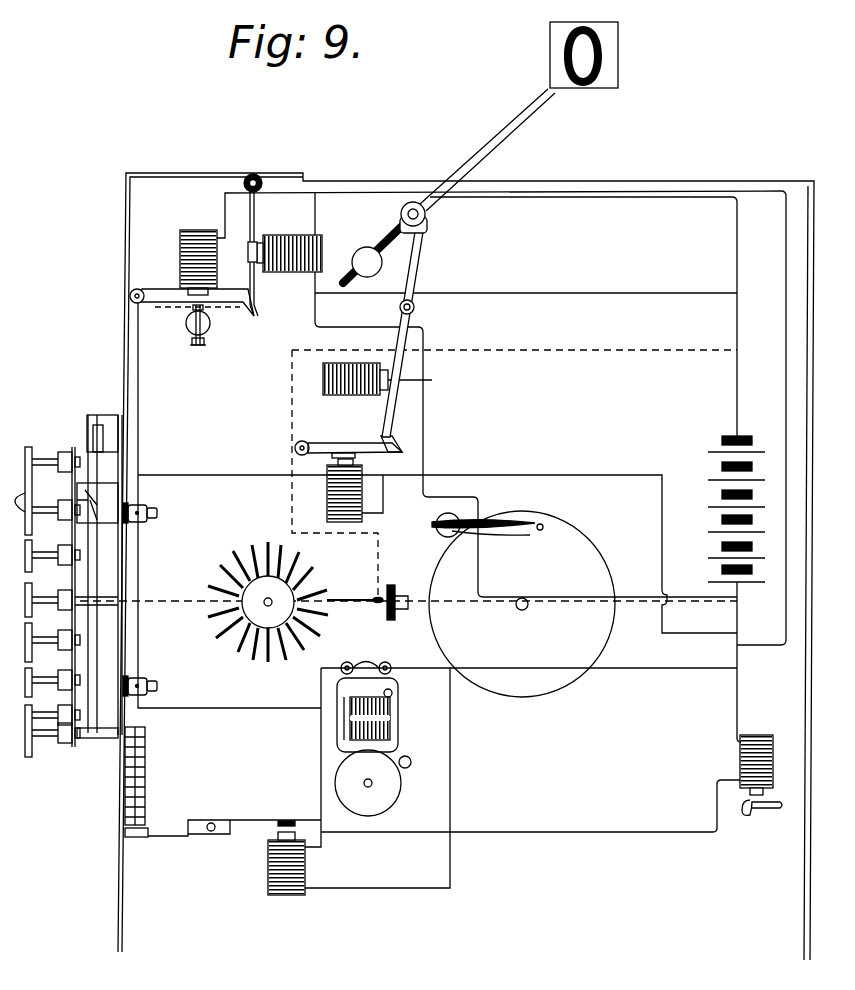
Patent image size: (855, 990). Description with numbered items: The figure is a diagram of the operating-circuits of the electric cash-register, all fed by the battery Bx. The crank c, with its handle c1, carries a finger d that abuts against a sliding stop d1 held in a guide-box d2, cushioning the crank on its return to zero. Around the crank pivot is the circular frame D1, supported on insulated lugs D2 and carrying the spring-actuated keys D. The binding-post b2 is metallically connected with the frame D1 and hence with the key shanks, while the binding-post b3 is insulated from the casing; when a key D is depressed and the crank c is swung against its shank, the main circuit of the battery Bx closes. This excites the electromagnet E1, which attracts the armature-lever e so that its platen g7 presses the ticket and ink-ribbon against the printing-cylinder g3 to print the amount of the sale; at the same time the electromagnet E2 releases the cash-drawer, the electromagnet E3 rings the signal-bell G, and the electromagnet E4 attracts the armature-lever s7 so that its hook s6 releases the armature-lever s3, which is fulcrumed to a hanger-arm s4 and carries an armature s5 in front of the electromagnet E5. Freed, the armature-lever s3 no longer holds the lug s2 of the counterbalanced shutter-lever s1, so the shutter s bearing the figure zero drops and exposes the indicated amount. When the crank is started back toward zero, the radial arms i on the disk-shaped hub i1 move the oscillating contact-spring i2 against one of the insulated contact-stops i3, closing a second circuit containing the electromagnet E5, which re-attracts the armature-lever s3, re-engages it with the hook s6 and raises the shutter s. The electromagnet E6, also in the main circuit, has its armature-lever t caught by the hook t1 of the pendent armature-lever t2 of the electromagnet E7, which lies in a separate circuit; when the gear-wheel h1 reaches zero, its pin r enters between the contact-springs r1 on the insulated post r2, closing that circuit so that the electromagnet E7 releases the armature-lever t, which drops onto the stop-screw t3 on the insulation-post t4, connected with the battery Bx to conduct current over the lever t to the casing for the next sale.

The shutter s is at (618, 55).
The shutter-lever s1 is at (477, 163).
The lug s2 is at (428, 215).
The armature-lever s3 is at (410, 265).
The hanger-arm s4 is at (372, 263).
The armature s5 is at (443, 383).
The hook s6 is at (402, 447).
The armature-lever s7 is at (348, 441).
The armature-lever t is at (192, 309).
The hook t1 is at (261, 317).
The armature-lever t2 is at (245, 239).
The stop-screw t3 is at (206, 328).
The insulation-post t4 is at (191, 327).
The electromagnet E1 is at (282, 868).
The electromagnet E2 is at (750, 765).
The electromagnet E3 is at (380, 712).
The electromagnet E4 is at (335, 500).
The electromagnet E5 is at (357, 395).
The electromagnet E6 is at (182, 262).
The electromagnet E7 is at (295, 241).
The signal-bell G is at (390, 785).
The gear-wheel h1 is at (522, 604).
The pin r is at (544, 538).
The contact-springs r1 is at (503, 520).
The insulated post r2 is at (444, 530).
The battery Bx is at (662, 520).
The radial arms i is at (239, 558).
The disk-shaped hub i1 is at (268, 602).
The oscillating contact-spring i2 is at (420, 588).
The insulated contact-stops i3 is at (390, 632).
The binding-post b2 is at (153, 514).
The binding-post b3 is at (153, 687).
The crank c is at (88, 548).
The handle c1 is at (290, 820).
The finger d is at (95, 470).
The sliding stop d1 is at (105, 438).
The guide-box d2 is at (100, 413).
The keys D is at (35, 600).
The circular frame D1 is at (80, 435).
The lugs D2 is at (92, 737).
The armature-lever e is at (234, 839).
The printing-cylinder g3 is at (145, 760).
The platen g7 is at (135, 838).